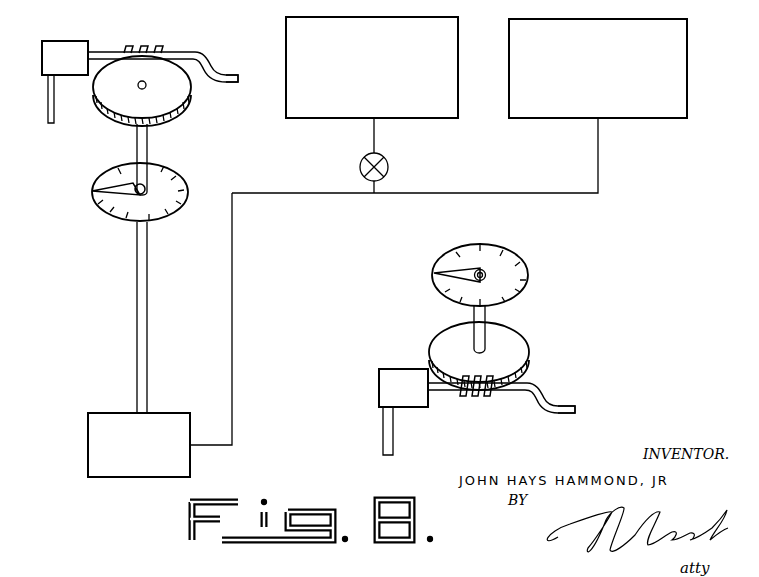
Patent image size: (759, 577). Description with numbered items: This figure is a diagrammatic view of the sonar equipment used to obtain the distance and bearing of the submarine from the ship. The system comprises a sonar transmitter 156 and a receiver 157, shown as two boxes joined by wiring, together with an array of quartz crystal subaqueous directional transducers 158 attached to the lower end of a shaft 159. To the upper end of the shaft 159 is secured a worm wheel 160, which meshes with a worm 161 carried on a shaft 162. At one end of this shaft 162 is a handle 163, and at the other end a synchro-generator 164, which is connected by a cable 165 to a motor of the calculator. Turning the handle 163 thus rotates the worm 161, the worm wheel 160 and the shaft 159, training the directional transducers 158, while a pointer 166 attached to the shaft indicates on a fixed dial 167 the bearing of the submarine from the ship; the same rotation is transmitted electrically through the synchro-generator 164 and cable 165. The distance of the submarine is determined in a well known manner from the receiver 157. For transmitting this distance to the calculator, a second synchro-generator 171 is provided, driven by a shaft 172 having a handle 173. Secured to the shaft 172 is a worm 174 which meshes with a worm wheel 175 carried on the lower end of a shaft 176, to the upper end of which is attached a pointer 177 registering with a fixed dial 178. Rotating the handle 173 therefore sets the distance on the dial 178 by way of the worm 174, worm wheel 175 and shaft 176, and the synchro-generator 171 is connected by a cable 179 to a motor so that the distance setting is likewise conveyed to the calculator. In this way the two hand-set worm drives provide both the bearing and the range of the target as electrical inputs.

The sonar transmitter 156 is at (680, 30).
The receiver 157 is at (287, 22).
The array of quartz crystal subaqueous directional transducers 158 is at (110, 415).
The shaft 159 is at (147, 284).
The worm wheel 160 is at (180, 116).
The worm 161 is at (138, 49).
The shaft 162 is at (188, 58).
The handle 163 is at (212, 73).
The synchro-generator 164 is at (62, 46).
The cable 165 is at (48, 86).
The pointer 166 is at (120, 176).
The fixed dial 167 is at (113, 224).
The synchro-generator 171 is at (400, 372).
The shaft 172 is at (520, 390).
The handle 173 is at (565, 400).
The worm 174 is at (476, 396).
The worm wheel 175 is at (512, 342).
The shaft 176 is at (462, 318).
The pointer 177 is at (470, 265).
The fixed dial 178 is at (526, 266).
The cable 179 is at (383, 421).